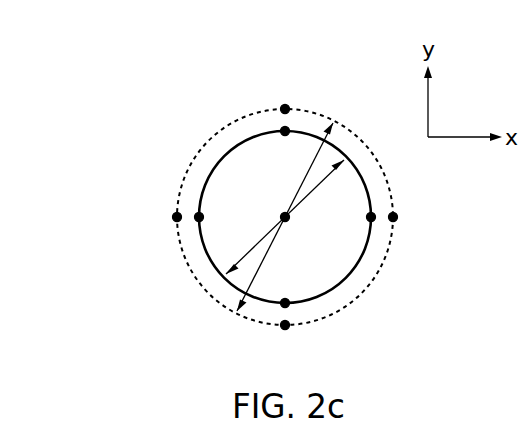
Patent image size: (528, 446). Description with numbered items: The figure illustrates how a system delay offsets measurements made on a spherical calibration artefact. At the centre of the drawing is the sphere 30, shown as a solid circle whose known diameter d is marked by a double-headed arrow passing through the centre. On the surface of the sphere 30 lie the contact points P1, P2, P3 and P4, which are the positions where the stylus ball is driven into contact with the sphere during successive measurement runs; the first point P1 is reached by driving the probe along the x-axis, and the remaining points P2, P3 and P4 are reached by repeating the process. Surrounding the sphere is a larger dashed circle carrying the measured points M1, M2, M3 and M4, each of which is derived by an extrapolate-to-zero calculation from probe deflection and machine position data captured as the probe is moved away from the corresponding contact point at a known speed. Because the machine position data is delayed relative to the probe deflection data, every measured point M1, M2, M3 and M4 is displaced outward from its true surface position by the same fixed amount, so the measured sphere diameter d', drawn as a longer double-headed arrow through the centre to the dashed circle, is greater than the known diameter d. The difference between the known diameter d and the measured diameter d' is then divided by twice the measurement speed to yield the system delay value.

The sphere 30 is at (258, 190).
The measured point M1 is at (160, 219).
The measured point M2 is at (411, 219).
The measured point M3 is at (284, 343).
The measured point M4 is at (286, 97).
The first point P1 is at (216, 223).
The point P2 is at (355, 223).
The point P3 is at (288, 290).
The point P4 is at (290, 151).
The sphere diameter d is at (285, 217).
The measured sphere diameter d' is at (285, 217).